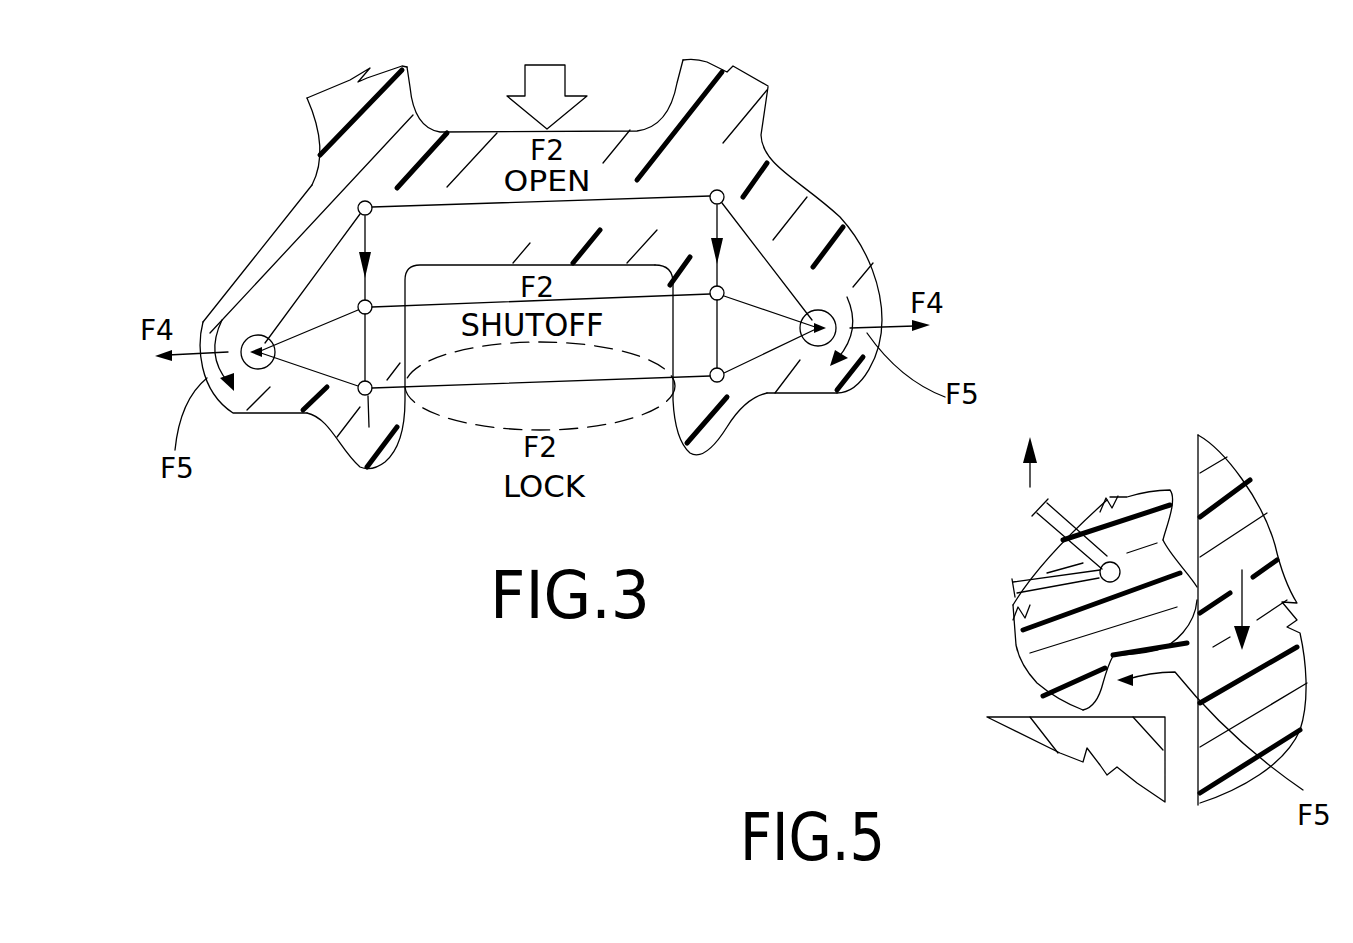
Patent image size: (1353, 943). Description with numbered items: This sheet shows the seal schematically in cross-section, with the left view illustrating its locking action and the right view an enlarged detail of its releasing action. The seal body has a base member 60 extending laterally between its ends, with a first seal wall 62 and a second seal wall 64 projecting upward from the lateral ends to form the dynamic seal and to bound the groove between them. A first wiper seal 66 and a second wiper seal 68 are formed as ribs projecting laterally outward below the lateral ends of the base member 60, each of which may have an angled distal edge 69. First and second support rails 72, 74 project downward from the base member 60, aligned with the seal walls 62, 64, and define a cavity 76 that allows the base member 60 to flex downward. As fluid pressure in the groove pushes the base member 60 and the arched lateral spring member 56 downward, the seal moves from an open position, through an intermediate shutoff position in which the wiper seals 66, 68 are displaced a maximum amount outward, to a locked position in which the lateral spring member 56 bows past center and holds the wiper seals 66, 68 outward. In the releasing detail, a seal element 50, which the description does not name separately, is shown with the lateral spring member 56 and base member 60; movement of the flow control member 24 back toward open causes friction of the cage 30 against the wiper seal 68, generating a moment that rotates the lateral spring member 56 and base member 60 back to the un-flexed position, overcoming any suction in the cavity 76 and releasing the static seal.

In FIG. 5, the flow control member 24 is at (1083, 747).
In FIG. 5, the cage 30 is at (1243, 503).
In FIG. 5, the cam member 50 is at (1000, 631).
In FIG. 3, the lateral spring member 56 is at (663, 193).
In FIG. 5, the lateral spring member 56 is at (1025, 600).
In FIG. 3, the base member 60 is at (628, 160).
In FIG. 5, the base member 60 is at (1193, 587).
In FIG. 3, the first seal wall 62 is at (337, 108).
In FIG. 3, the second seal wall 64 is at (732, 80).
In FIG. 3, the first wiper seal 66 is at (230, 267).
In FIG. 3, the second wiper seal 68 is at (863, 247).
In FIG. 3, the angled distal edge 69 is at (233, 414).
In FIG. 3, the first support rail 72 is at (360, 457).
In FIG. 3, the second support rail 74 is at (713, 447).
In FIG. 5, the second support rail 74 is at (1060, 672).
In FIG. 5, the cavity 76 is at (1000, 683).